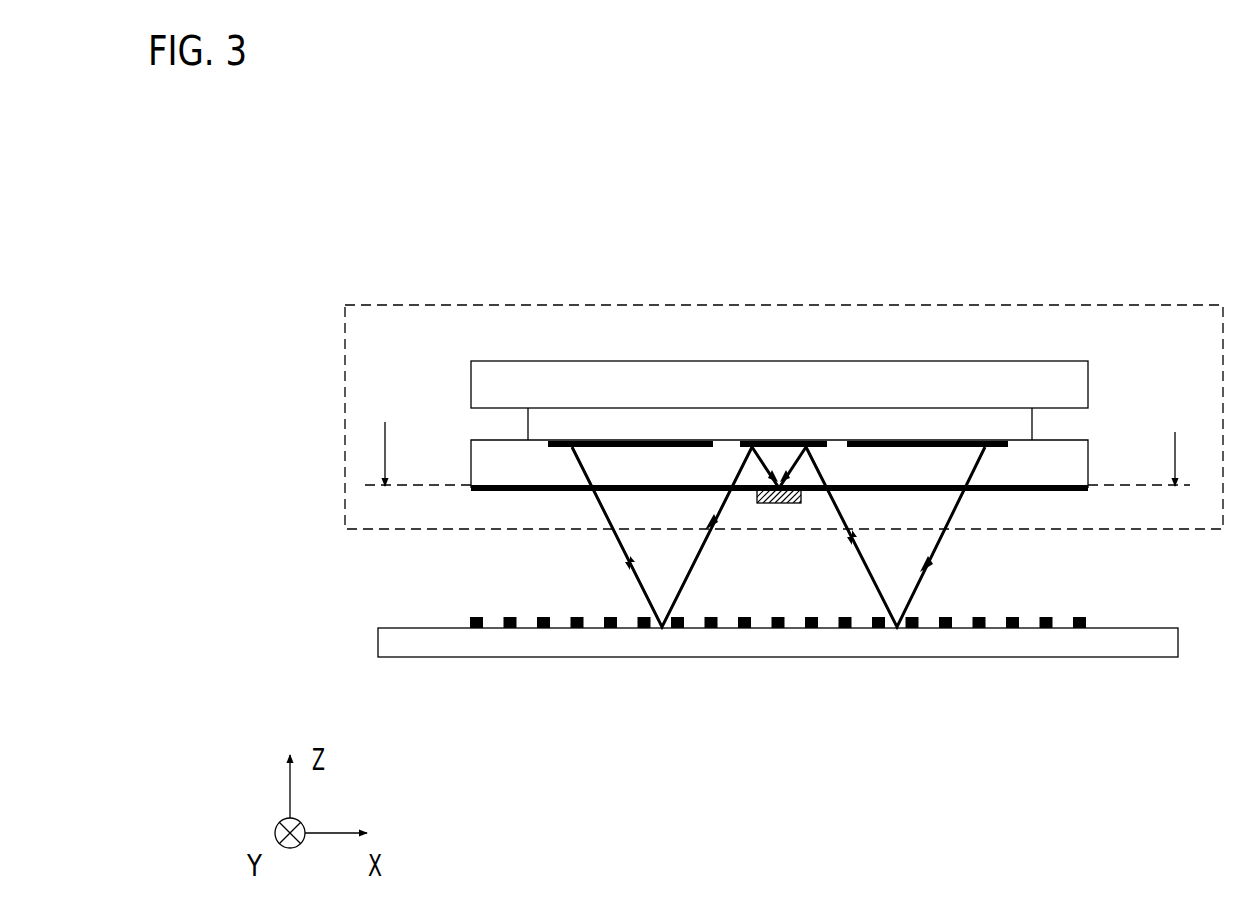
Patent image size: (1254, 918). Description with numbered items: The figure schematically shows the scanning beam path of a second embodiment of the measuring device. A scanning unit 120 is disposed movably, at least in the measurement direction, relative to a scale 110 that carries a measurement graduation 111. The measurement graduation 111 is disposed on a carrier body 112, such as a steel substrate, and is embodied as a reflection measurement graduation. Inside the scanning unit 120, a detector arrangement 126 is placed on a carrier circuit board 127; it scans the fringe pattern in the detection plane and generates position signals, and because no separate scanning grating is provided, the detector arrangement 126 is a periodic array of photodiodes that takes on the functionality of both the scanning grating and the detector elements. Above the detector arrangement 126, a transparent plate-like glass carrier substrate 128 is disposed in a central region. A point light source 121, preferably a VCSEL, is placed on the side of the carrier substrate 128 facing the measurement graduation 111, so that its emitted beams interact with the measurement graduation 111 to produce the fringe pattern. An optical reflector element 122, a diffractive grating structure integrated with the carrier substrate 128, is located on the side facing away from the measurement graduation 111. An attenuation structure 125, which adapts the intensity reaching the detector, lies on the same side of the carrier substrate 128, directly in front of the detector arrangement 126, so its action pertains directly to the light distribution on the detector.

The scale 110 is at (699, 653).
The measurement graduation 111 is at (467, 616).
The carrier body 112 is at (500, 648).
The scanning unit 120 is at (340, 472).
The light source 121 is at (794, 504).
The optical reflector element 122 is at (752, 441).
The attenuation structure 125 is at (606, 441).
The detector arrangement 126 is at (1013, 425).
The carrier circuit board 127 is at (946, 378).
The carrier substrate 128 is at (1056, 465).